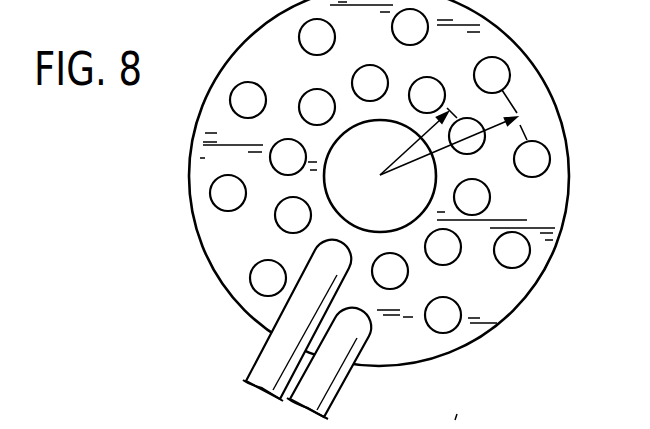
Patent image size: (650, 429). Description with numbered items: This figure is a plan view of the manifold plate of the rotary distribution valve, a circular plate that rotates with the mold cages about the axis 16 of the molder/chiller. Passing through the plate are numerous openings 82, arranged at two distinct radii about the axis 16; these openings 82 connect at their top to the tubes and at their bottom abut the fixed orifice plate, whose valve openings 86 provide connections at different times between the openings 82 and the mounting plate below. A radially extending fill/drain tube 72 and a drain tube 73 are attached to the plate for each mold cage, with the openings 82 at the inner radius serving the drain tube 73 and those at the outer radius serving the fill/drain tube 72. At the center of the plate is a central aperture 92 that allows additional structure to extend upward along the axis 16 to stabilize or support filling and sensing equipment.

The axis 16 is at (380, 175).
The fill/drain tube 72 is at (315, 388).
The drain tube 73 is at (262, 366).
The openings 82 is at (490, 197).
The valve openings 86 is at (522, 50).
The central aperture 92 is at (340, 213).